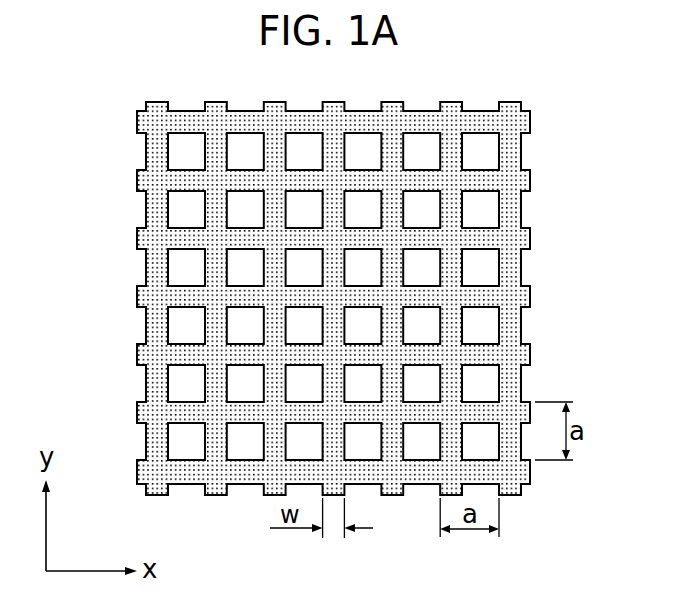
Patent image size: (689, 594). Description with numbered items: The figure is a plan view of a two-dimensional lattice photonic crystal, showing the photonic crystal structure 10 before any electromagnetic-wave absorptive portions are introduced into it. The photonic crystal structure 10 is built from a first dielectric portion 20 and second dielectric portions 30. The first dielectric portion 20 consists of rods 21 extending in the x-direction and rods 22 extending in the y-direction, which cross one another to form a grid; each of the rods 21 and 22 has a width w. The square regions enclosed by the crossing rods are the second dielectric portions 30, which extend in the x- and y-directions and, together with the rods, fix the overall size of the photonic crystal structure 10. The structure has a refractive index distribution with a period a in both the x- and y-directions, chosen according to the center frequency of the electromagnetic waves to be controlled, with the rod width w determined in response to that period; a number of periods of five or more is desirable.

The photonic crystal structure 10 is at (342, 265).
The first dielectric portion 20 is at (524, 177).
The rod extending to the x-direction 21 is at (490, 242).
The rod extending to the y-direction 22 is at (508, 373).
The second dielectric portion 30 is at (180, 323).